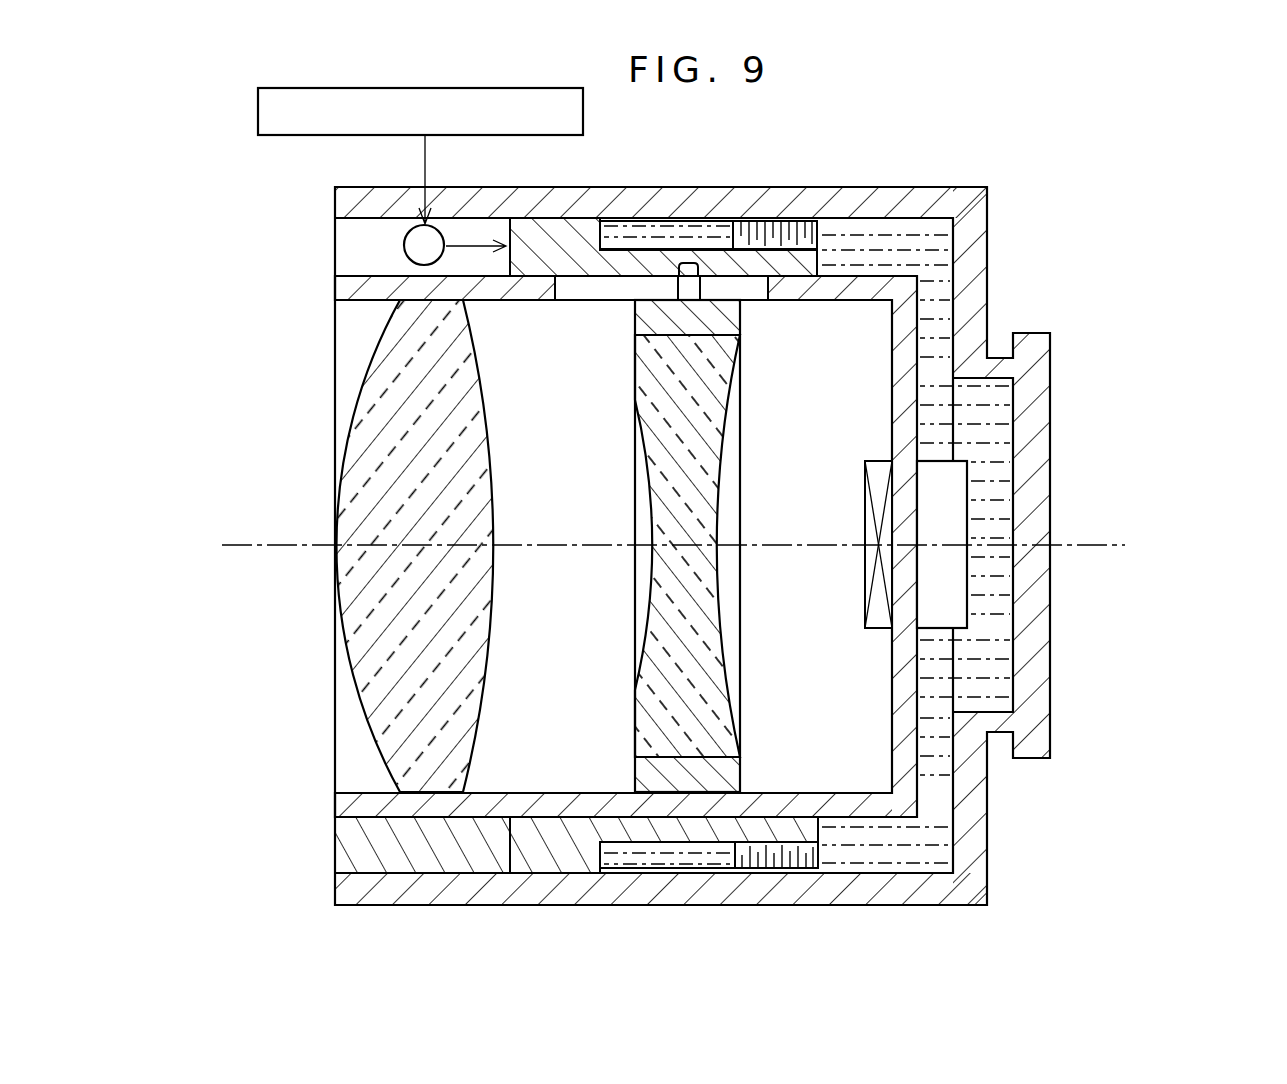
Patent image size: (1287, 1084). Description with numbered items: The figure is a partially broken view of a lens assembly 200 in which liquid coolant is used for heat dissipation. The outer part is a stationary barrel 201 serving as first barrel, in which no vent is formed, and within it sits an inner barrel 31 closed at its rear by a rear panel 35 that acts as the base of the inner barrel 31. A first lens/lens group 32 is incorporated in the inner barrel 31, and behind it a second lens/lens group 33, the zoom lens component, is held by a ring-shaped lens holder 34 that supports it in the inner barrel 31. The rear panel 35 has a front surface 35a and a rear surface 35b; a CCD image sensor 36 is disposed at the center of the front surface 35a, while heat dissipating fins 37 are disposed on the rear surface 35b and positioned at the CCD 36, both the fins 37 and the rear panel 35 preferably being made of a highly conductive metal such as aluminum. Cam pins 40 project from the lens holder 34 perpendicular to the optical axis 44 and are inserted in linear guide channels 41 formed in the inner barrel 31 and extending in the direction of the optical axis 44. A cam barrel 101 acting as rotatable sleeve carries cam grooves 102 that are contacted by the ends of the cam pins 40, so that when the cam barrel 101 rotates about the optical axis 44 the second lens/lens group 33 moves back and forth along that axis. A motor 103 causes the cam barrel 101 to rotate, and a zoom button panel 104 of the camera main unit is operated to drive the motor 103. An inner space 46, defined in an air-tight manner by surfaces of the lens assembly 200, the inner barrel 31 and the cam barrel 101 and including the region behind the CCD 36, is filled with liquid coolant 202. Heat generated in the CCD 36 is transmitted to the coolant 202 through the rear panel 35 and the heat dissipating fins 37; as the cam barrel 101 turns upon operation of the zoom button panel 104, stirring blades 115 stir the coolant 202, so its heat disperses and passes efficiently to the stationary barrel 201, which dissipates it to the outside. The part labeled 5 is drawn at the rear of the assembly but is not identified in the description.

The rear plate 5 is at (1040, 760).
The inner barrel 31 is at (335, 289).
The first lens/lens group 32 is at (337, 578).
The second lens/lens group 33 is at (657, 605).
The lens holder 34 is at (635, 777).
The rear panel 35 is at (905, 640).
The front surface 35a is at (892, 686).
The rear surface 35b is at (925, 674).
The CCD image sensor 36 is at (865, 489).
The heat dissipating fins 37 is at (953, 568).
The cam pins 40 is at (689, 262).
The linear guide channels 41 is at (565, 298).
The optical axis 44 is at (258, 545).
The inner space 46 is at (990, 400).
The cam barrel 101 is at (722, 248).
The cam grooves 102 is at (674, 262).
The motor 103 is at (404, 246).
The zoom button panel 104 is at (258, 110).
The stirring blades 115 is at (815, 235).
The lens assembly 200 is at (1122, 295).
The stationary barrel 201 is at (987, 205).
The liquid coolant 202 is at (988, 488).